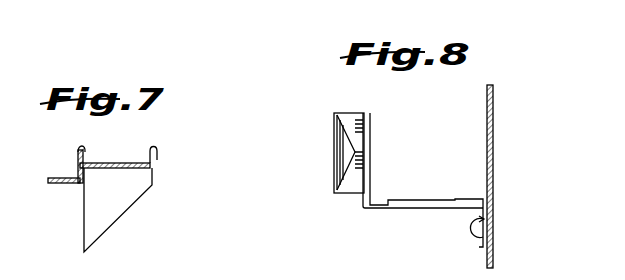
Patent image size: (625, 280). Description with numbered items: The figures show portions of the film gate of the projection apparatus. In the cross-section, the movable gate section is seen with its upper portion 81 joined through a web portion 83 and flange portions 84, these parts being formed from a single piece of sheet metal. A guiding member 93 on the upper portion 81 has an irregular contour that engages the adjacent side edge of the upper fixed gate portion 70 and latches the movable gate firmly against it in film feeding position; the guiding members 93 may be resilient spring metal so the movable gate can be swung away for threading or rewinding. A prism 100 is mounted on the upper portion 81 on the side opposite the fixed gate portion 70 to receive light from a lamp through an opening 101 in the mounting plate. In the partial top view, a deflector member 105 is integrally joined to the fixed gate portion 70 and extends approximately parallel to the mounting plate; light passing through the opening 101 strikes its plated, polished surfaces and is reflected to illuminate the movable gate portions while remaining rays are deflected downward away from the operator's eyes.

In FIG. 7, the upper portion 81 is at (112, 162).
In FIG. 7, the flange portions 84 is at (78, 172).
In FIG. 7, the guiding member 93 is at (78, 150).
In FIG. 7, the web portion 83 is at (52, 183).
In FIG. 7, the prism 100 is at (116, 214).
In FIG. 8, the opening 101 is at (490, 153).
In FIG. 8, the fixed gate portion 70 is at (462, 208).
In FIG. 8, the deflector member 105 is at (334, 143).